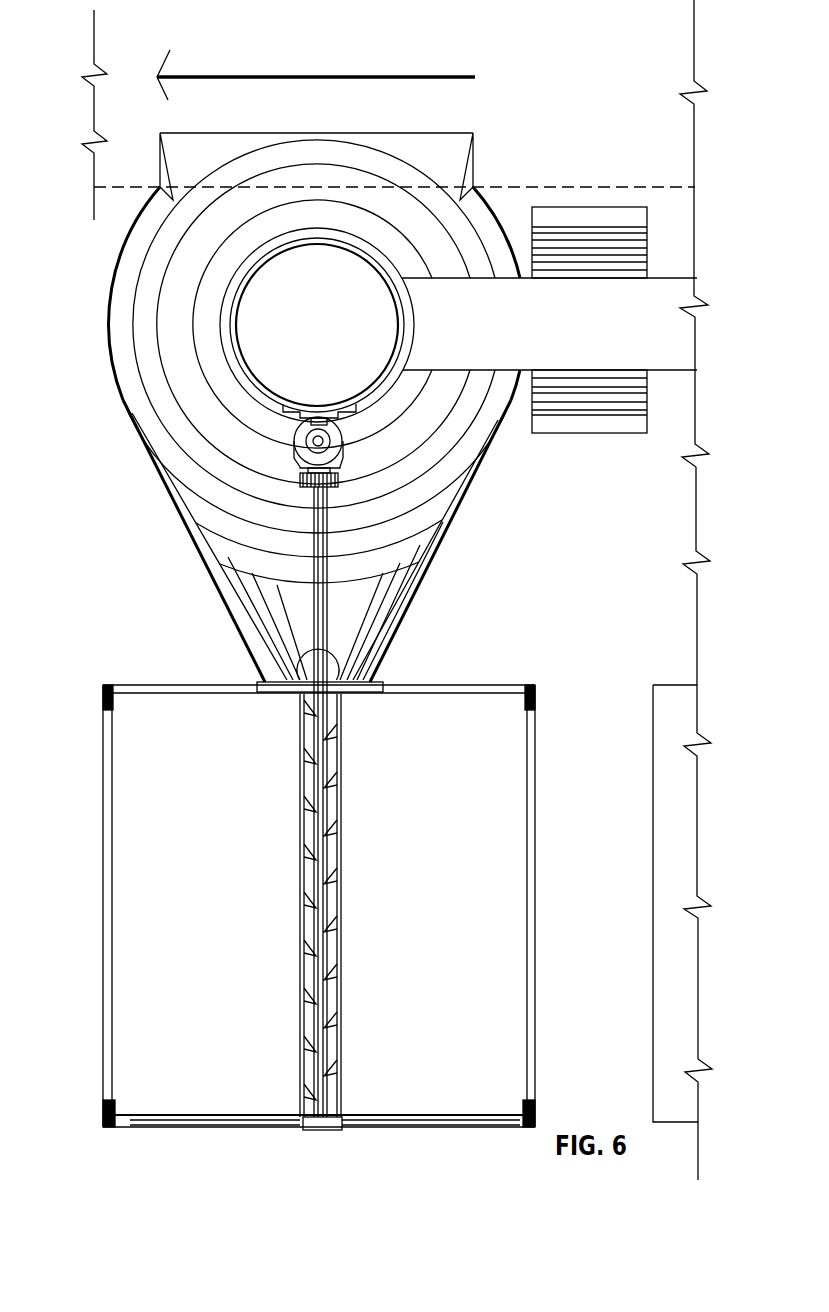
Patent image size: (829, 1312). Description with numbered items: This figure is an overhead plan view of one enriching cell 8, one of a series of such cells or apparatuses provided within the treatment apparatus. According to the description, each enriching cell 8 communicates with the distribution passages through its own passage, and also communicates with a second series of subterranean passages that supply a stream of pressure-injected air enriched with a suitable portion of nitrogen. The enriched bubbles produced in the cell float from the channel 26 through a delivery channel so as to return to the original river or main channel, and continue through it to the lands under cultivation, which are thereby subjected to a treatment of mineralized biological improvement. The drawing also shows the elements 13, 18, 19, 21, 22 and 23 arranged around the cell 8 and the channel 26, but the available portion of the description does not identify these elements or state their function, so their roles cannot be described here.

The enriching cell 8 is at (370, 250).
The pipe / shaft connection 13 is at (585, 325).
The collecting drum / container 18 is at (440, 967).
The screw conveyor 19 is at (333, 783).
The shaft 21 is at (317, 325).
The outer drum shell 22 is at (197, 155).
The annular chamber 23 is at (260, 230).
The channel 26 is at (430, 145).